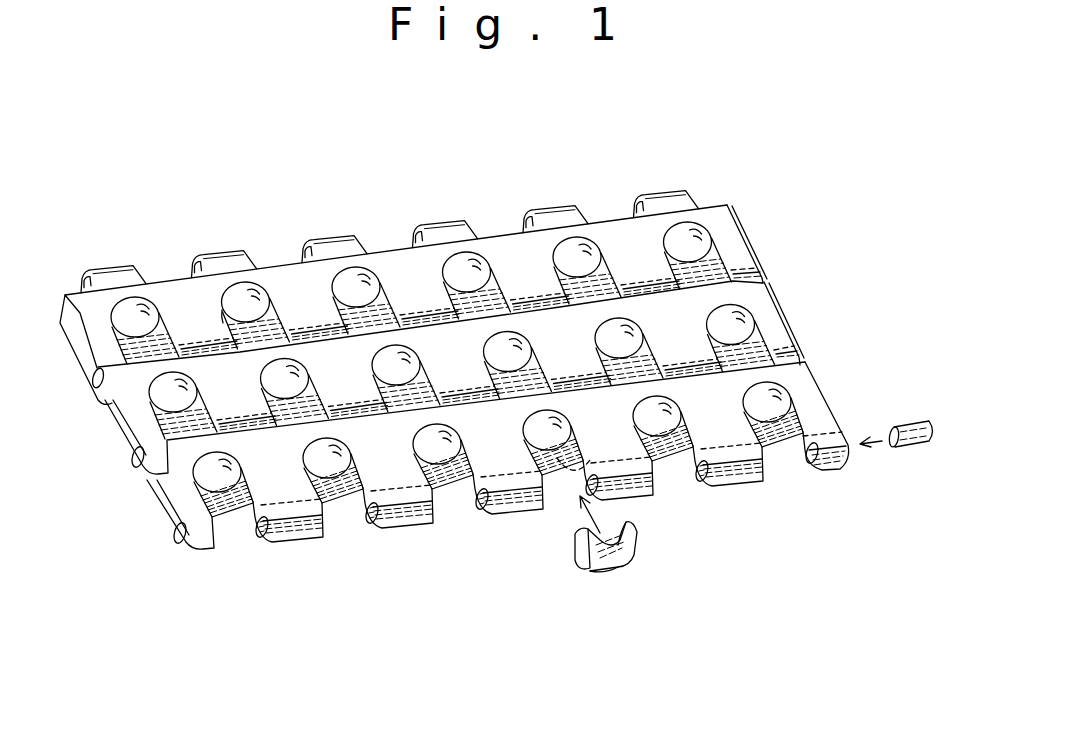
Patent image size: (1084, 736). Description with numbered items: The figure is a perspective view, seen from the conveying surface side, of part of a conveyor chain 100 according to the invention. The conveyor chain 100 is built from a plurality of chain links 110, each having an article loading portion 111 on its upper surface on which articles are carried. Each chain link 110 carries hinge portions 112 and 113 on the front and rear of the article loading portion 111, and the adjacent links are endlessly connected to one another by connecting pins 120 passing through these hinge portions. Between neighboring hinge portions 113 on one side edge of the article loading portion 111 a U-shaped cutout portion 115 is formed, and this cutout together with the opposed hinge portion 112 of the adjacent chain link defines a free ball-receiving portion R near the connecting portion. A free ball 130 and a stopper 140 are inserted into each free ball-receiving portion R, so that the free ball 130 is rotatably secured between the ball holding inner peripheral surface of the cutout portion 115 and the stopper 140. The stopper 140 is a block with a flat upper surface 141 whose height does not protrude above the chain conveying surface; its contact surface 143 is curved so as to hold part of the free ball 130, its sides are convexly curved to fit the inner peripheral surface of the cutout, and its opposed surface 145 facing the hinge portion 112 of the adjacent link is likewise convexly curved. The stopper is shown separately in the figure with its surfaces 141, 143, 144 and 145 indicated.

The conveyor chain 100 is at (488, 363).
The chain link 110 is at (758, 232).
The article loading portion 111 is at (397, 484).
The hinge portion 112 is at (293, 318).
The hinge portion 113 is at (517, 488).
The U-shaped cutout portion 115 is at (280, 335).
The connecting pin 120 is at (910, 463).
The free ball 130 is at (229, 291).
The stopper 140 is at (457, 399).
The flat upper surface 141 is at (632, 540).
The contact surface 143 is at (628, 527).
The first end portion 144 is at (577, 551).
The opposed surface 145 is at (598, 569).
The free ball-receiving portion R is at (230, 317).